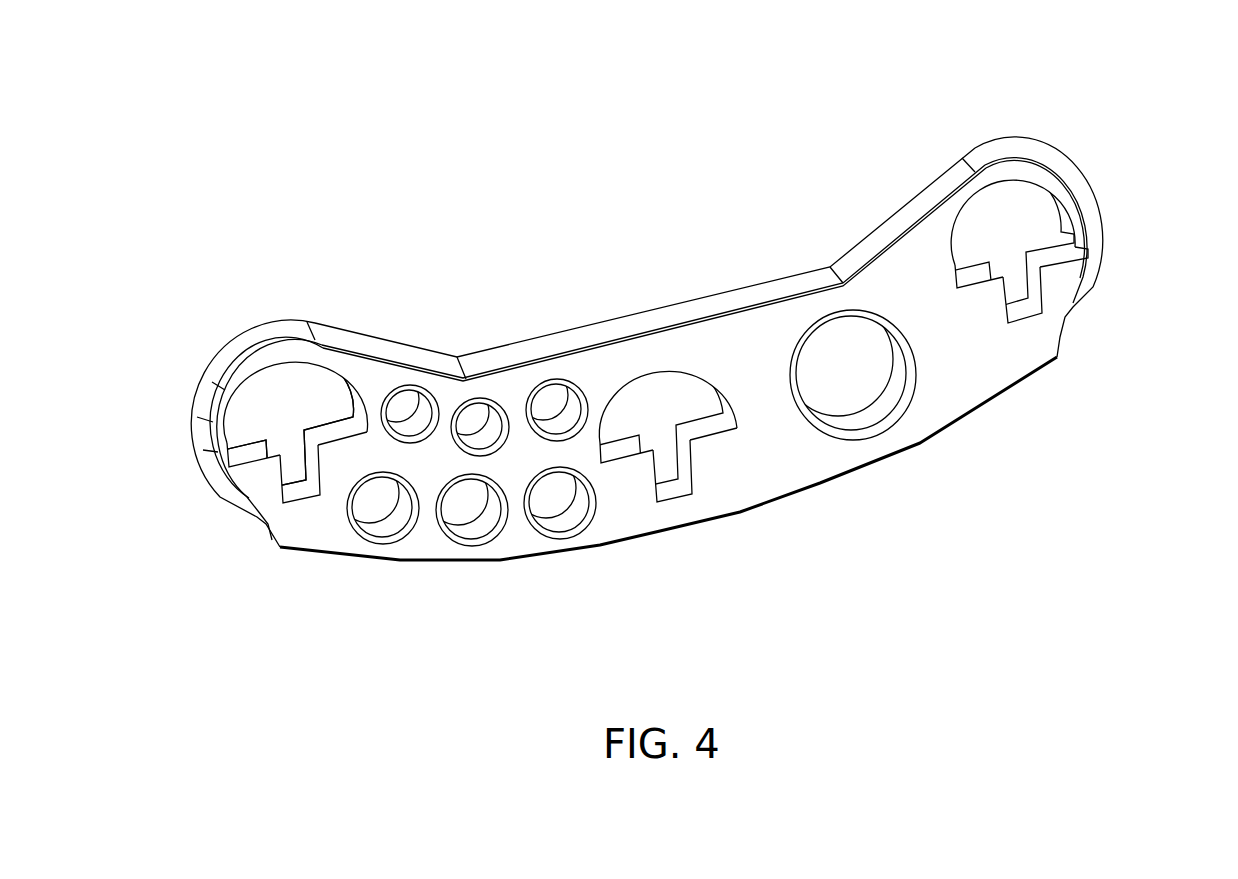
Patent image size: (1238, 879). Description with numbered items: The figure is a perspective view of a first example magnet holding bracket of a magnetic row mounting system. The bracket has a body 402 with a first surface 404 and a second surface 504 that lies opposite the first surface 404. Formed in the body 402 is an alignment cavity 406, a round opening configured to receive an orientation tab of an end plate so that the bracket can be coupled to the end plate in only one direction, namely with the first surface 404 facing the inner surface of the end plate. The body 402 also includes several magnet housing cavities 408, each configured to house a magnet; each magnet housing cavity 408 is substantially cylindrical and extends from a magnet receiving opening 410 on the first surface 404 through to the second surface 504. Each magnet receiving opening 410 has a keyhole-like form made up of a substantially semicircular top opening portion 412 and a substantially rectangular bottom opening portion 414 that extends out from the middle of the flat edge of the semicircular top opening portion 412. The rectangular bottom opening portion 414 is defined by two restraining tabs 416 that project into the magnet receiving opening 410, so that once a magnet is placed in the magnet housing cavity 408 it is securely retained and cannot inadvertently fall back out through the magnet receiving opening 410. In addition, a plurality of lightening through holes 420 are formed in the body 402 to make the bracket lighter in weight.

The body 402 is at (770, 362).
The first surface 404 is at (927, 405).
The alignment cavity 406 is at (858, 350).
The magnet housing cavity 408 is at (313, 378).
The magnet receiving opening 410 is at (671, 364).
The semicircular top opening portion 412 is at (272, 388).
The rectangular bottom opening portion 414 is at (293, 476).
The restraining tabs 416 is at (270, 468).
The lightening through holes 420 is at (547, 407).
The second surface 504 is at (567, 307).